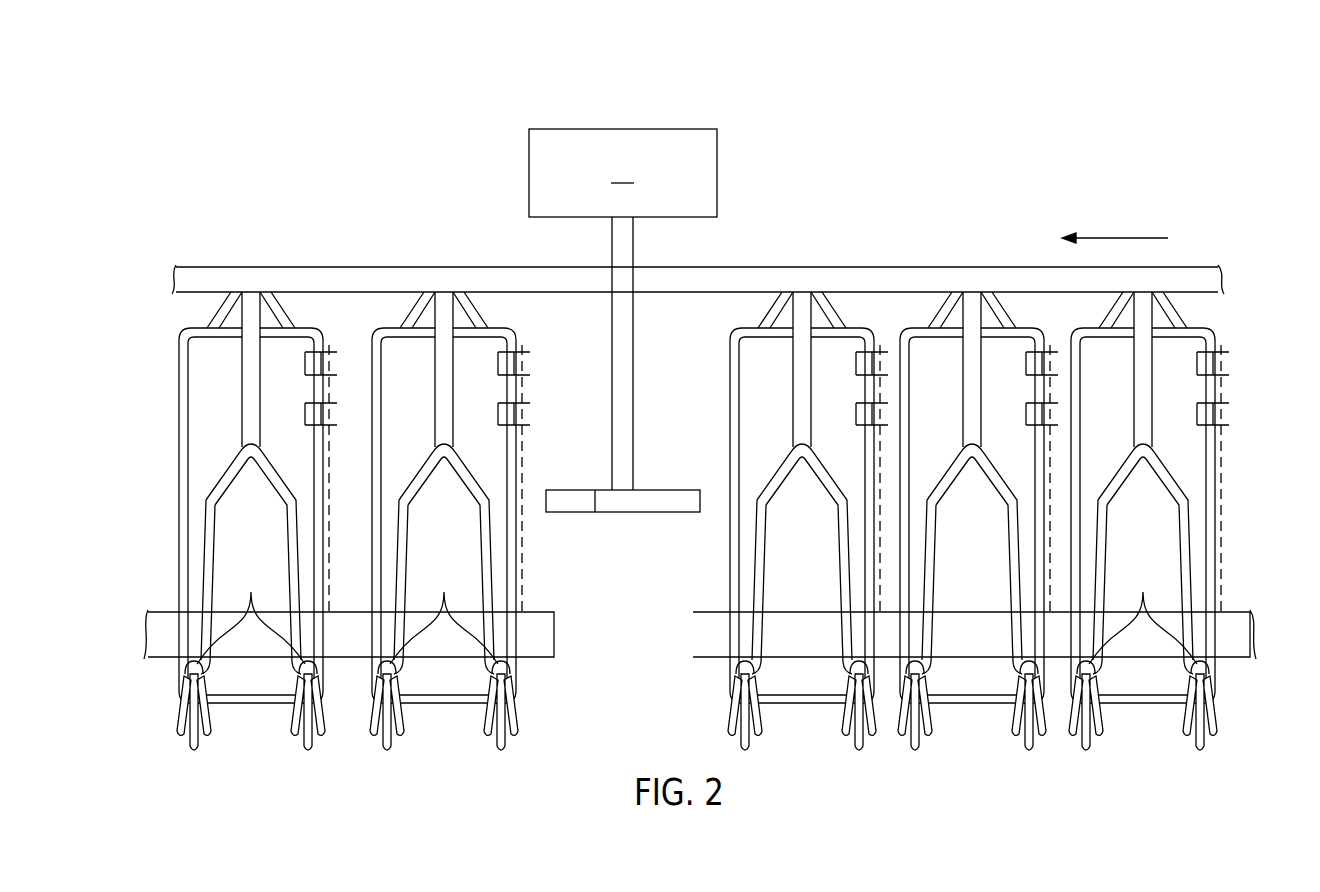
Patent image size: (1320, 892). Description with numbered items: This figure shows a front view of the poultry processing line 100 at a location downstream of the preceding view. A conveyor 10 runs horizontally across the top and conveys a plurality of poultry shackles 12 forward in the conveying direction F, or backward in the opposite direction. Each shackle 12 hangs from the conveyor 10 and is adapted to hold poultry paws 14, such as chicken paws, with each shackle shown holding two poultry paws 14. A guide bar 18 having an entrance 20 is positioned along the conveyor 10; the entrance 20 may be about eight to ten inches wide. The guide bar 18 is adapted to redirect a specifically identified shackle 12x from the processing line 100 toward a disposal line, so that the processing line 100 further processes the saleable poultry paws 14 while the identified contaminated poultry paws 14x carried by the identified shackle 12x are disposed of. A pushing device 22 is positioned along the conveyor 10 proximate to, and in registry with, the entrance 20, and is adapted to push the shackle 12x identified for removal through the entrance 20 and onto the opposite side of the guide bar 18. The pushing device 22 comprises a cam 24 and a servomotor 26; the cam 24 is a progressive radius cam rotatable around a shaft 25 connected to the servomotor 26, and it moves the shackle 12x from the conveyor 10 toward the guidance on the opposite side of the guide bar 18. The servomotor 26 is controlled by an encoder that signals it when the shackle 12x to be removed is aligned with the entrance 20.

The poultry processing line 100 is at (1012, 118).
The conveyor 10 is at (878, 280).
The poultry shackle 12 is at (703, 521).
The specifically identified shackle 12x is at (450, 521).
The poultry paw 14 is at (697, 613).
The contaminated poultry paw 14x is at (444, 612).
The guide bar 18 is at (537, 614).
The entrance 20 is at (701, 618).
The pushing device 22 is at (550, 119).
The cam 24 is at (652, 500).
The shaft 25 is at (623, 355).
The servomotor 26 is at (623, 173).